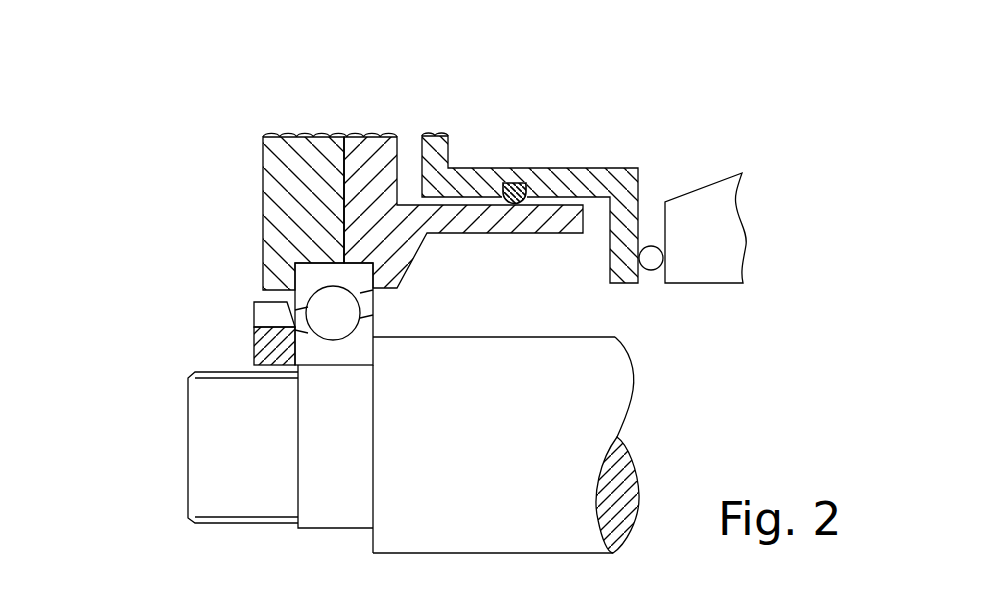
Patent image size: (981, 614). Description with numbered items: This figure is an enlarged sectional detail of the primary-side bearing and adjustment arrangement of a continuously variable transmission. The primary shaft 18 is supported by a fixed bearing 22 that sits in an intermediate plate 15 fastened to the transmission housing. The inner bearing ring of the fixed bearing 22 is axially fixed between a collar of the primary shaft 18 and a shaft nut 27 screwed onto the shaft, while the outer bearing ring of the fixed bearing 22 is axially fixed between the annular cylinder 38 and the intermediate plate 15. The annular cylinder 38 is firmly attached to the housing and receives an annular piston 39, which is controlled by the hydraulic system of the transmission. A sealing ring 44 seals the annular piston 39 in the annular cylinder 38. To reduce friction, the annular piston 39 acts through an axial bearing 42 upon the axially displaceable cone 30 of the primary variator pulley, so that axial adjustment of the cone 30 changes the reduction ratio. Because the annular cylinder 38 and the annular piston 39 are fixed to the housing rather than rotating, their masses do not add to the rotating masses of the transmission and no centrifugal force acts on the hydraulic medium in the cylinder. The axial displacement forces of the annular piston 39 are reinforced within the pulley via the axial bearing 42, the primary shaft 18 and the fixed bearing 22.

The intermediate plate 15 is at (285, 152).
The primary shaft 18 is at (205, 448).
The fixed bearing 22 is at (307, 278).
The shaft nut 27 is at (268, 348).
The cone 30 is at (730, 228).
The annular cylinder 38 is at (372, 157).
The annular piston 39 is at (622, 172).
The axial bearing 42 is at (653, 265).
The sealing ring 44 is at (513, 186).